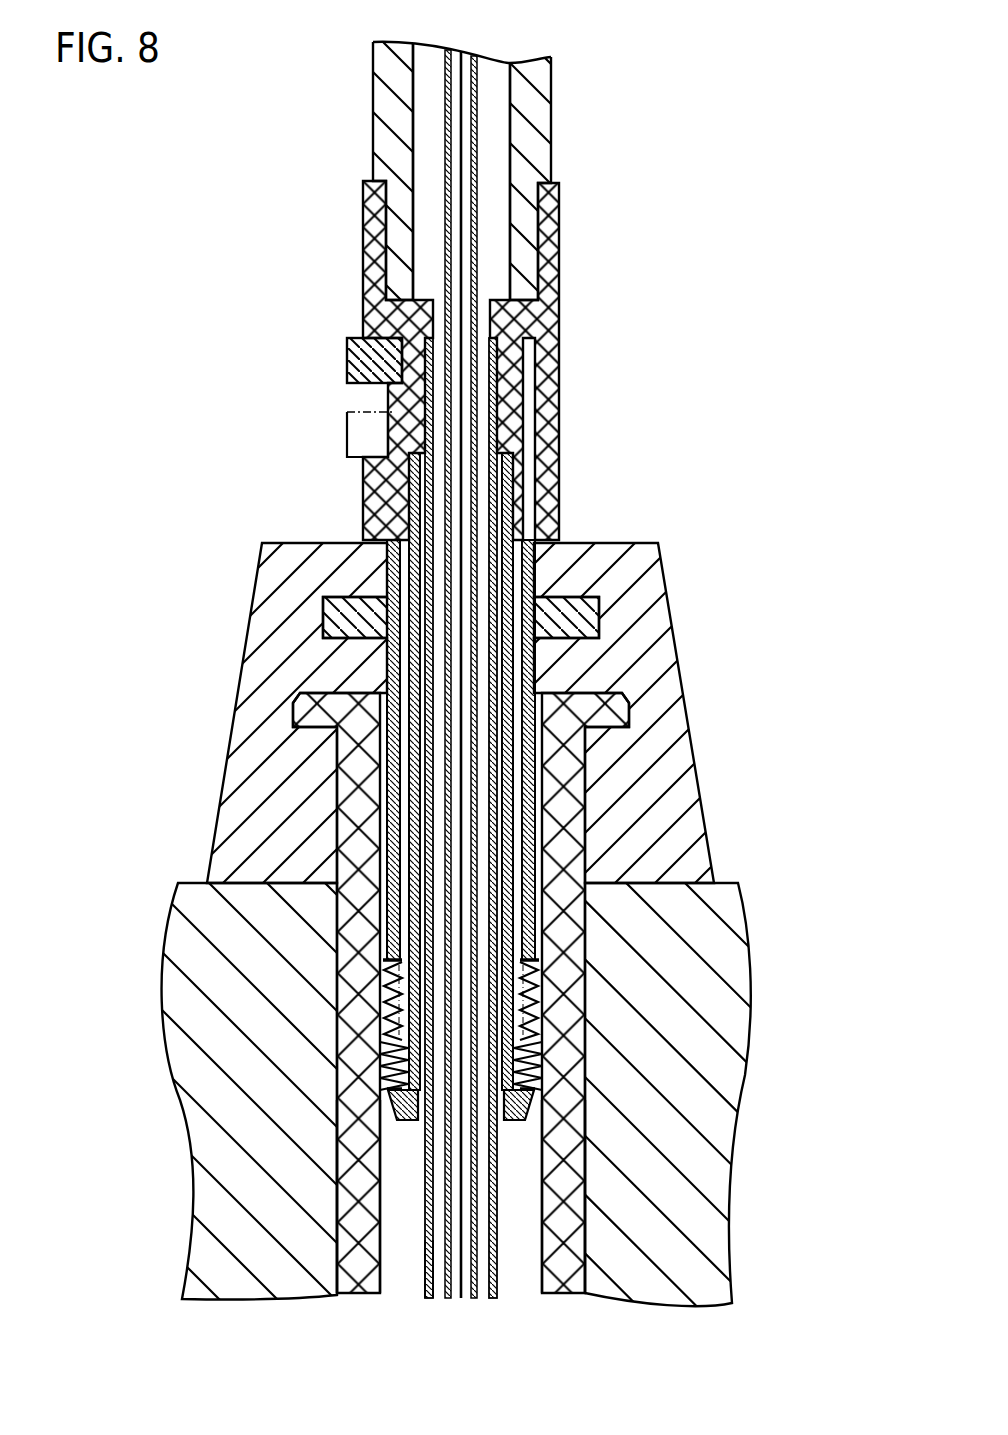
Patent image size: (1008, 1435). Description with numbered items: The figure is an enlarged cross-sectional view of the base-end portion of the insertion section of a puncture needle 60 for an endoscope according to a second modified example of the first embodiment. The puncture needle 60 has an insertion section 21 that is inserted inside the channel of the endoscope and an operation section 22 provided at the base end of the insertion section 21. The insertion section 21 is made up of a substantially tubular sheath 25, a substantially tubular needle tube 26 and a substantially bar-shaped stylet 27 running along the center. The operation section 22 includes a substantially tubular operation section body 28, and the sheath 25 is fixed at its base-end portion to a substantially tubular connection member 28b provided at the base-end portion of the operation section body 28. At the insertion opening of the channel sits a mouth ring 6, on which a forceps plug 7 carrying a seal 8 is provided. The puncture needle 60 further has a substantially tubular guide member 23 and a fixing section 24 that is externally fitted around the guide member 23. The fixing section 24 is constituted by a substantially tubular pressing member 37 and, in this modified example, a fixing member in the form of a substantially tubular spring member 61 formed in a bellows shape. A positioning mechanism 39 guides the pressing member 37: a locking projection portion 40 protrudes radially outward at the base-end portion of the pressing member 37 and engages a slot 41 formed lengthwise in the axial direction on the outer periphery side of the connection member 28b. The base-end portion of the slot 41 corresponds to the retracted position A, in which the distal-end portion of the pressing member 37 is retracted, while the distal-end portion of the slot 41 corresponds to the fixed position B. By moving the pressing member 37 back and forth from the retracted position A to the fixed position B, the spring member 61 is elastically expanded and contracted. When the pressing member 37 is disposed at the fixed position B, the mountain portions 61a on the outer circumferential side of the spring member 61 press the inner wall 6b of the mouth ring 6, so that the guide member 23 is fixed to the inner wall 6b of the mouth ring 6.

The puncture needle 60 is at (733, 100).
The operation section 22 is at (551, 72).
The operation section body 28 is at (551, 107).
The needle tube 26 is at (478, 150).
The stylet 27 is at (463, 182).
The connection member 28b is at (559, 362).
The positioning mechanism 39 is at (190, 393).
The locking projection portion 40 is at (355, 365).
The slot 41 is at (370, 398).
The forceps plug 7 is at (660, 660).
The seal 8 is at (588, 622).
The mouth ring 6 is at (568, 758).
The inner wall 6b is at (378, 1216).
The fixing section 24 is at (493, 815).
The pressing member 37 is at (532, 563).
The spring member 61 is at (520, 1033).
The mountain portions 61a is at (543, 1080).
The guide member 23 is at (510, 840).
The insertion section 21 is at (424, 1238).
The sheath 25 is at (424, 1272).
The retracted position A is at (380, 993).
The fixed position B is at (377, 1062).